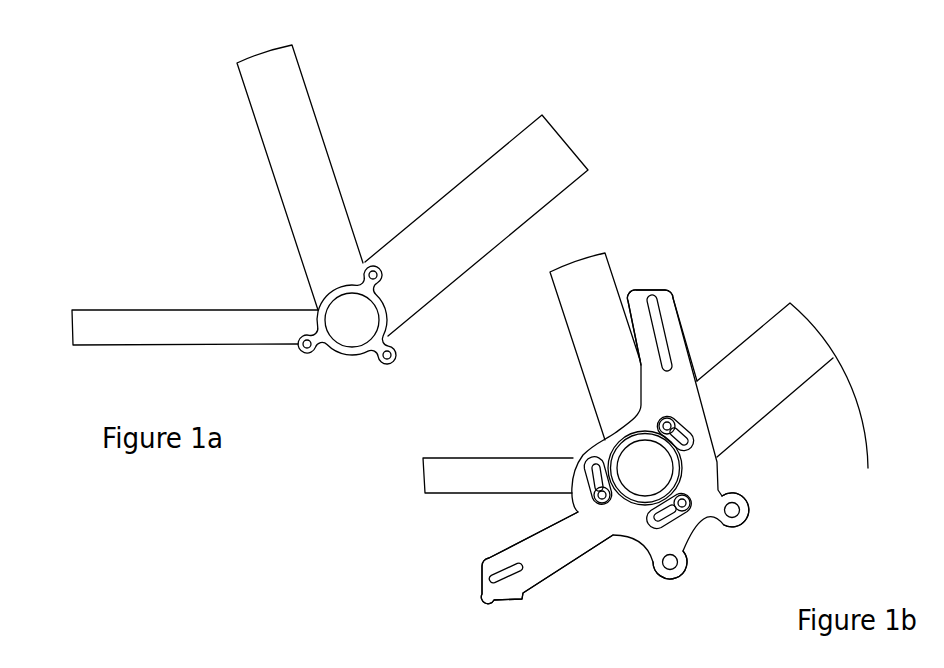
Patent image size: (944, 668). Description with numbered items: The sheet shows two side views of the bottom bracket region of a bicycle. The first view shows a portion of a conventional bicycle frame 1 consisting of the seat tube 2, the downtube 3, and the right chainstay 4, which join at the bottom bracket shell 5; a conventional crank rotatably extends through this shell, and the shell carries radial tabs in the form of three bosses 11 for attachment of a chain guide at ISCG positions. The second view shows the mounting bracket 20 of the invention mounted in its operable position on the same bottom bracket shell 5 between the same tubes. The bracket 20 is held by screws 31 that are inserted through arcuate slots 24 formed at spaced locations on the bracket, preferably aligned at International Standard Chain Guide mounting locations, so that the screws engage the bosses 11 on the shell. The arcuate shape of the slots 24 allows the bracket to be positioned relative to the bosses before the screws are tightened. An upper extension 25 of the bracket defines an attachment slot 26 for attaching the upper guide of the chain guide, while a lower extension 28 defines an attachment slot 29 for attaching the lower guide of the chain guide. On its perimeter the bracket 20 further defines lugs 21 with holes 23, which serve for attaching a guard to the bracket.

In FIG. 1A, the bicycle frame 1 is at (208, 182).
In FIG. 1A, the seat tube 2 is at (318, 177).
In FIG. 1A, the downtube 3 is at (463, 200).
In FIG. 1A, the right chainstay 4 is at (223, 318).
In FIG. 1A, the bottom bracket shell 5 is at (352, 354).
In FIG. 1A, the bosses 11 is at (376, 267).
In FIG. 1B, the mounting bracket 20 is at (615, 437).
In FIG. 1B, the lugs 21 is at (745, 510).
In FIG. 1B, the holes 23 is at (737, 517).
In FIG. 1B, the arcuate slots 24 is at (690, 431).
In FIG. 1B, the upper extension 25 is at (673, 315).
In FIG. 1B, the attachment slot 26 is at (666, 352).
In FIG. 1B, the lower extension 28 is at (527, 552).
In FIG. 1B, the attachment slot 29 is at (490, 578).
In FIG. 1B, the screws 31 is at (670, 420).